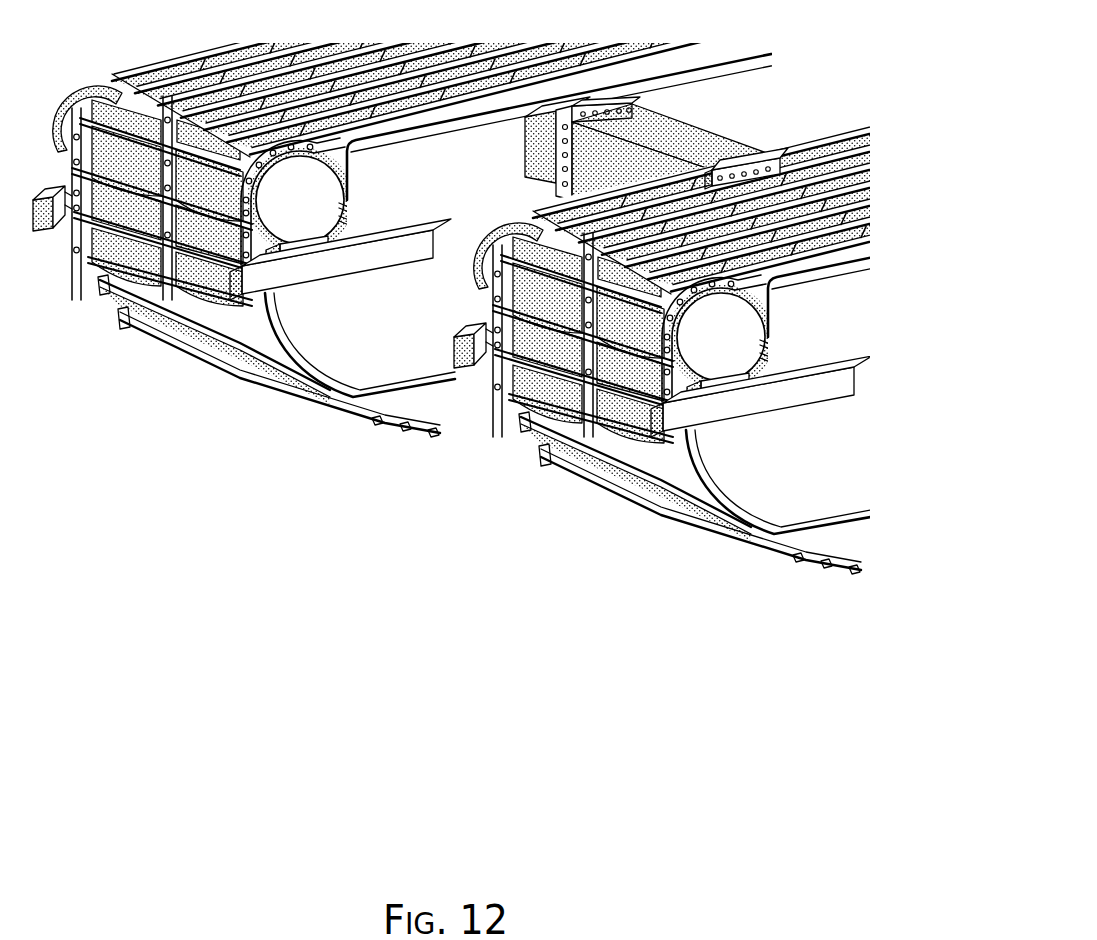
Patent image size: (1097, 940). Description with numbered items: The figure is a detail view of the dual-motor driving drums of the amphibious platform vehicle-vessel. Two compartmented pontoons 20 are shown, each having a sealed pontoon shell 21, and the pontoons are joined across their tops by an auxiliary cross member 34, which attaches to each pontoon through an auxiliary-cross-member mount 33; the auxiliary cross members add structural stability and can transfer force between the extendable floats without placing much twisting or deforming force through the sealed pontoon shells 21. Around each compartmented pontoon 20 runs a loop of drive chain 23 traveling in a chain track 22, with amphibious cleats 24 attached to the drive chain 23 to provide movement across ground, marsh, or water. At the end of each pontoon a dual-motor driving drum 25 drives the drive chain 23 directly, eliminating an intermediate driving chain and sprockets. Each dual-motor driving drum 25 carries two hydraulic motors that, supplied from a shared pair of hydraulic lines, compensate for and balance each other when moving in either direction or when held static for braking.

The compartmented pontoon 20 is at (94, 487).
The sealed pontoon shell 21 is at (367, 331).
The chain track 22 is at (100, 246).
The drive chain 23 is at (103, 285).
The amphibious cleat 24 is at (121, 319).
The dual-motor driving drum 25 is at (79, 104).
The auxiliary-cross-member mount 33 is at (780, 166).
The auxiliary cross member 34 is at (524, 160).